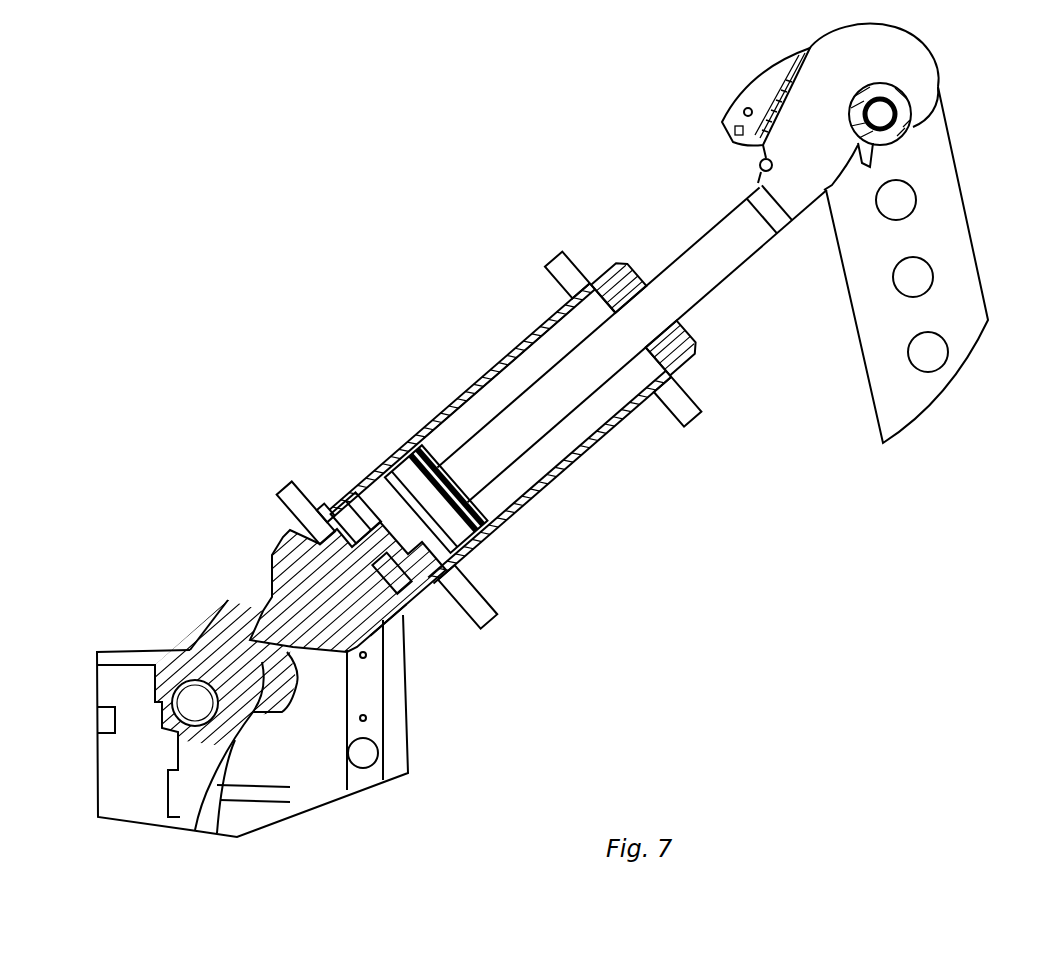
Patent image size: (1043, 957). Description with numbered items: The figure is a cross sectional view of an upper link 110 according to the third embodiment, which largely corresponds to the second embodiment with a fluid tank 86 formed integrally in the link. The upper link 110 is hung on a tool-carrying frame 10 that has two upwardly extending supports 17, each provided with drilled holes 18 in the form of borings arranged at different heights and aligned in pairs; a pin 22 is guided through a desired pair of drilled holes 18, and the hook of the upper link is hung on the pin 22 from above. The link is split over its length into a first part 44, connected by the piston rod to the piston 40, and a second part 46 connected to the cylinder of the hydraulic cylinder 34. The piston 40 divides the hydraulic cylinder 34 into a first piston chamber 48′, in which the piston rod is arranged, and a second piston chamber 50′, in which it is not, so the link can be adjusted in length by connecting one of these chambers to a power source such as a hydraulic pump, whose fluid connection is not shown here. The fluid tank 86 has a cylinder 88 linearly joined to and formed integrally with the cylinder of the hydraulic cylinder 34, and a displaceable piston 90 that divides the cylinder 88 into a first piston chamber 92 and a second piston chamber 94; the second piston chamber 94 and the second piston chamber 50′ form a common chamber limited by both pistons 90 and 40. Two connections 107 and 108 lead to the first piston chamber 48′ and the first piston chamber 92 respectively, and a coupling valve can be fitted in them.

The tool-carrying frame 10 is at (975, 242).
The support 17 is at (945, 172).
The drilled hole 18 is at (936, 358).
The pin 22 is at (913, 127).
The hydraulic cylinder 34 is at (475, 387).
The piston 40 is at (475, 548).
The first part 44 is at (748, 243).
The second part 46 is at (265, 612).
The first piston chamber 48′ is at (531, 363).
The second piston chamber 50′ is at (372, 497).
The fluid tank 86 is at (377, 613).
The cylinder 88 is at (325, 517).
The piston 90 is at (402, 596).
The first piston chamber 92 is at (283, 537).
The second piston chamber 94 is at (360, 502).
The connection 107 is at (563, 252).
The connection 108 is at (278, 488).
The upper link 110 is at (746, 484).